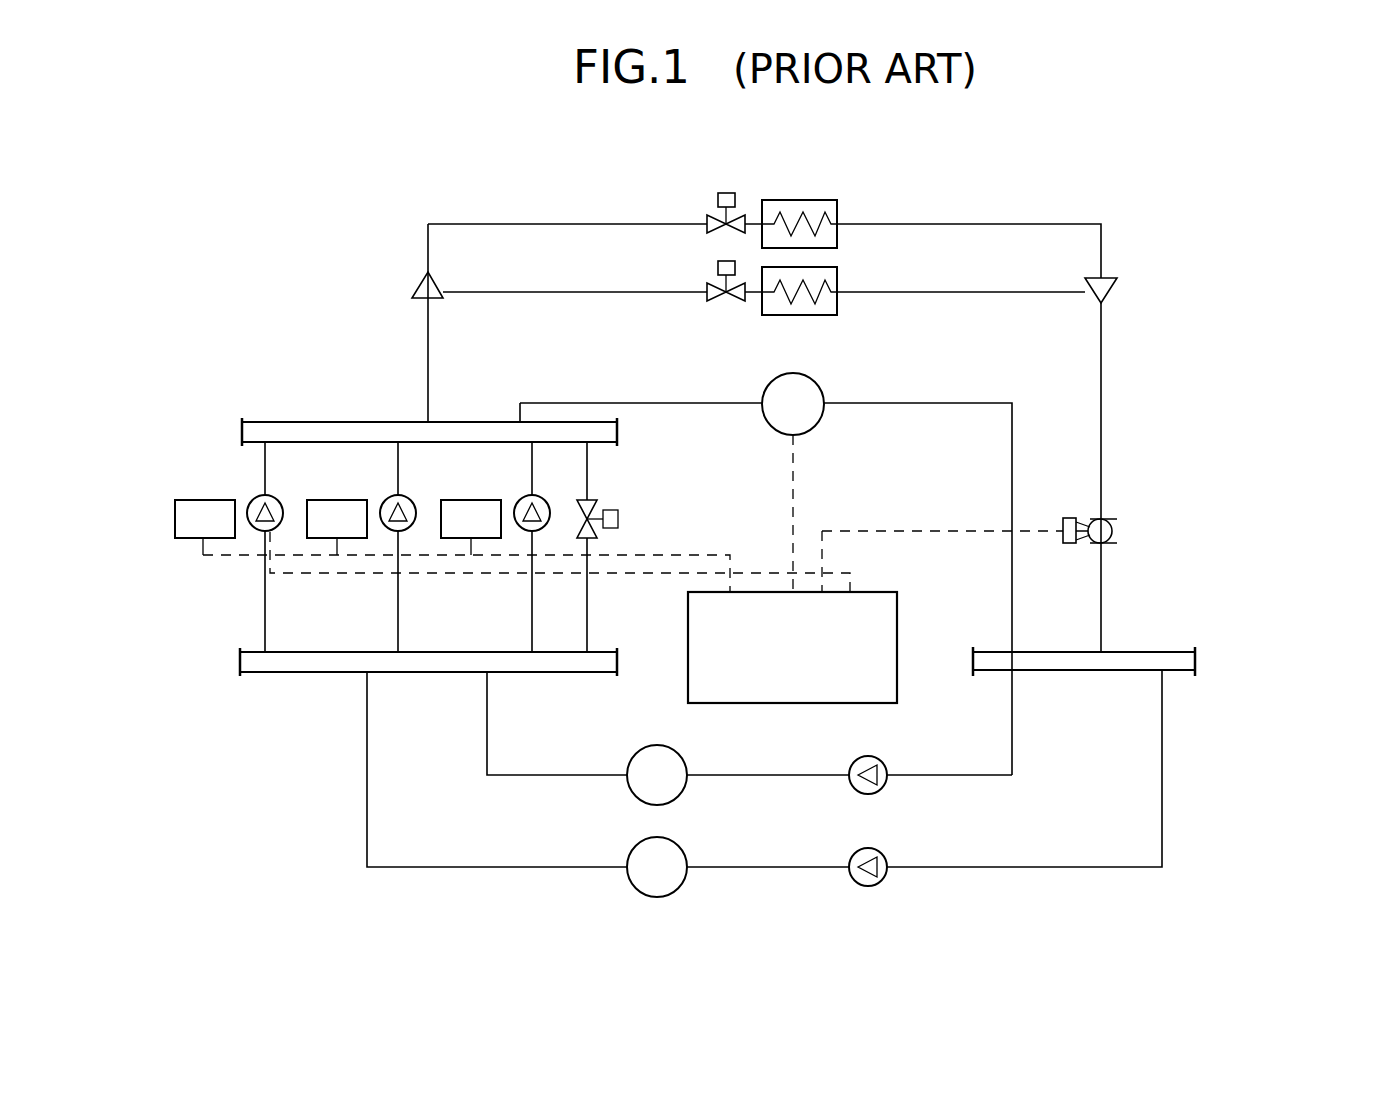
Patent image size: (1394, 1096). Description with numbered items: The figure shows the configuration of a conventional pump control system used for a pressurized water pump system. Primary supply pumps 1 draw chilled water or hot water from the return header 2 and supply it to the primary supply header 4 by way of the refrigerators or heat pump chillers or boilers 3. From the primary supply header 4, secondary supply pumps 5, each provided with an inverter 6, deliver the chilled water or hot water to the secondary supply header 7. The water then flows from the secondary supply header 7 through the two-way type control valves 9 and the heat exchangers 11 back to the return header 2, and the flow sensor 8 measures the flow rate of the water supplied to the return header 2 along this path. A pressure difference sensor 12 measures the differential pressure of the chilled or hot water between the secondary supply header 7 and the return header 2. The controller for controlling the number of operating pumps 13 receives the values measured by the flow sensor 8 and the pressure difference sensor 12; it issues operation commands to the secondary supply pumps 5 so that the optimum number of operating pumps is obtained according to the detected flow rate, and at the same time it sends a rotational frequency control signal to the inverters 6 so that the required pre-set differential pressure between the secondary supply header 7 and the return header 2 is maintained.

The primary supply pump 1 is at (886, 765).
The return header 2 is at (1143, 652).
The refrigerator or heat pump chiller or boiler 3 is at (684, 762).
The primary supply header 4 is at (265, 672).
The secondary supply pump 5 is at (250, 502).
The inverter 6 is at (183, 540).
The secondary supply header 7 is at (362, 422).
The flow sensor 8 is at (1117, 531).
The two-way type control valve 9 is at (718, 200).
The heat exchanger 11 is at (798, 200).
The pressure difference sensor 12 is at (800, 374).
The controller for controlling the number of operating pumps 13 is at (897, 622).